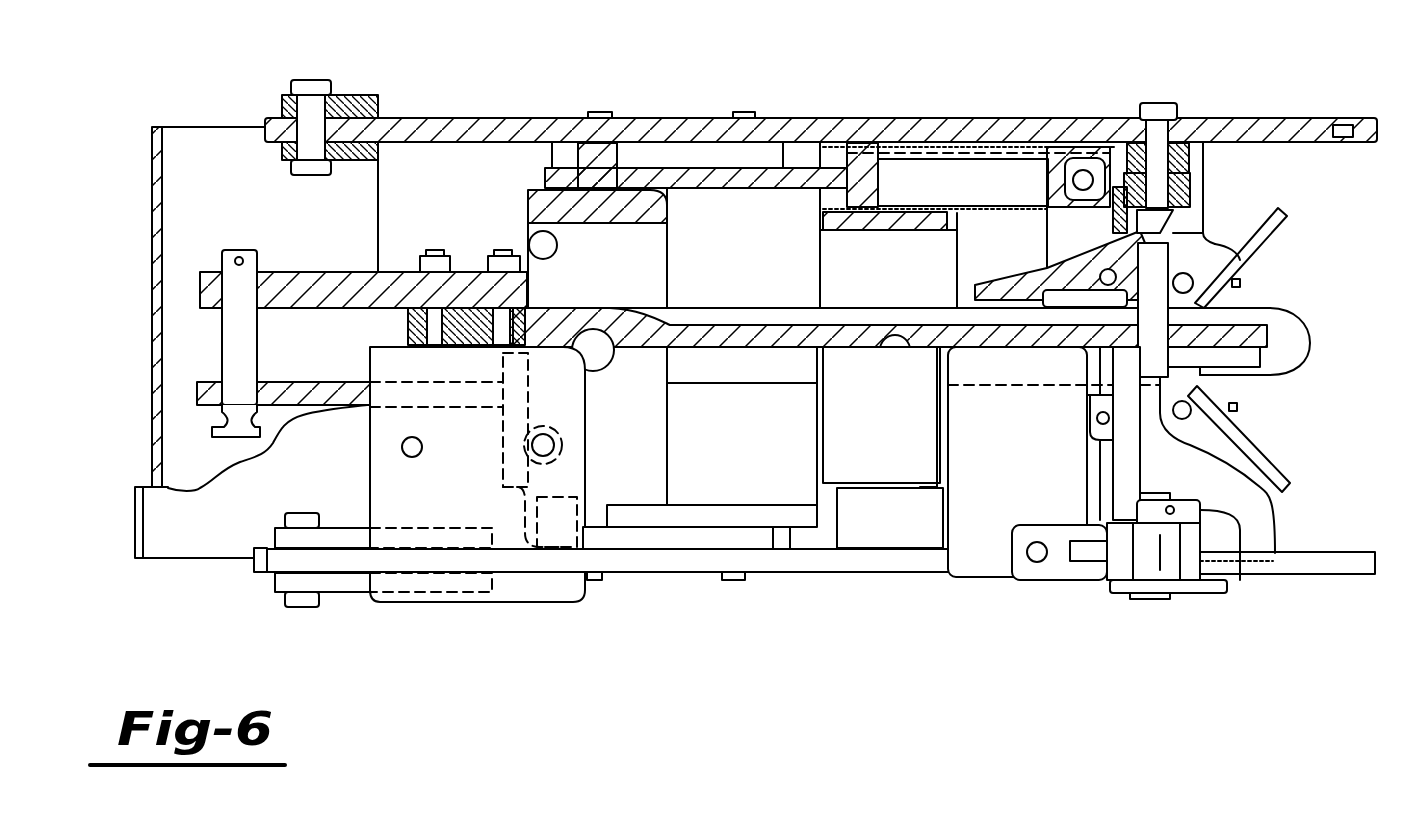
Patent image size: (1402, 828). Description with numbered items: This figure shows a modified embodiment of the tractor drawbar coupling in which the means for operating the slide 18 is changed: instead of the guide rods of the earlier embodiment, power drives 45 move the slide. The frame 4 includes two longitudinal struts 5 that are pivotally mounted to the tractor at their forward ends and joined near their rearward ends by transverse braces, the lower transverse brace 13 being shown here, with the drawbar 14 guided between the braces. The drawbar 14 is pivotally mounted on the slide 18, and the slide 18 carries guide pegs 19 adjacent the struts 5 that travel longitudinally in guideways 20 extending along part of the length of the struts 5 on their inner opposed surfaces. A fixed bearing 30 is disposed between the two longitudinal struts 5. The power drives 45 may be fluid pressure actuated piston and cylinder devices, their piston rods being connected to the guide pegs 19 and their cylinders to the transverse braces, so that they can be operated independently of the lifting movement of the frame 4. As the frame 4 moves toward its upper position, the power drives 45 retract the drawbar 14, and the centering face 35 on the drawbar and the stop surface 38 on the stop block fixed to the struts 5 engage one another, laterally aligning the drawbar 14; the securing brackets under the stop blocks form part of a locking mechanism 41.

The frame 4 is at (817, 573).
The longitudinal struts 5 is at (342, 127).
The lower transverse brace 13 is at (1113, 140).
The drawbar 14 is at (761, 361).
The slide 18 is at (640, 278).
The guide pegs 19 is at (575, 122).
The guideways 20 is at (698, 160).
The fixed bearing 30 is at (888, 460).
The centering faces 35 is at (1100, 253).
The stop surfaces 38 is at (1203, 227).
The locking mechanism 41 is at (1220, 587).
The power drives 45 is at (870, 150).